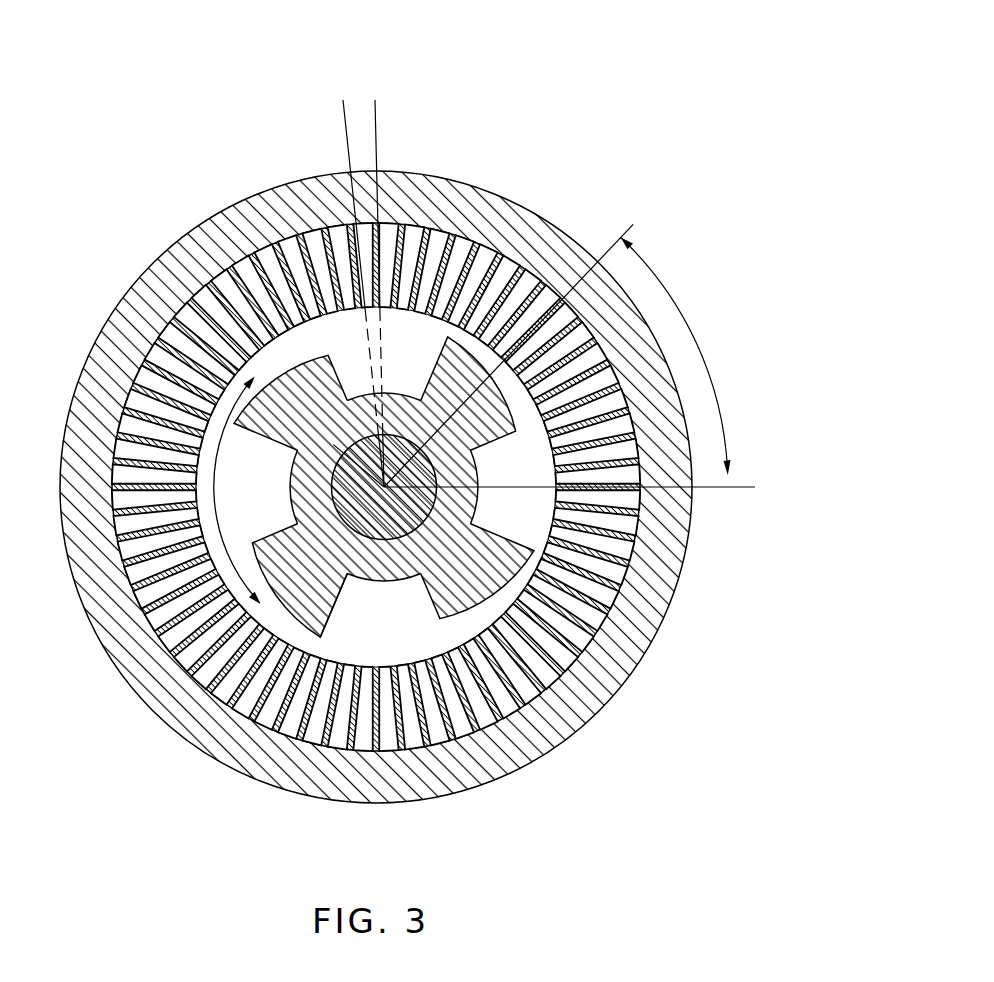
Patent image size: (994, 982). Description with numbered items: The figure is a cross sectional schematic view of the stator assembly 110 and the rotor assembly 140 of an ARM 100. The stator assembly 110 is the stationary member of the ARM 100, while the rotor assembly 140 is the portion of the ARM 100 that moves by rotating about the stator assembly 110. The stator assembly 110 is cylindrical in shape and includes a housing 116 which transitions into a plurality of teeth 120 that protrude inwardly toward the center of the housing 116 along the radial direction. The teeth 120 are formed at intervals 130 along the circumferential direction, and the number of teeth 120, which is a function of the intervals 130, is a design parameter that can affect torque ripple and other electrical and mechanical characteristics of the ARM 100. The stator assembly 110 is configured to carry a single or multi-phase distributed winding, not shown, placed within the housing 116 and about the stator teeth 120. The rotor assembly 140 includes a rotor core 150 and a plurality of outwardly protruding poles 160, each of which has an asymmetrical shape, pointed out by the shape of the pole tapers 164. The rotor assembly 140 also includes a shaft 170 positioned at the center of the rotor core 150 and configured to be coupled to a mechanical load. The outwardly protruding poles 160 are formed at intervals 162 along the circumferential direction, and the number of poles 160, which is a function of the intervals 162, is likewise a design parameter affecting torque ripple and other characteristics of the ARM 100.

The ARM 100 is at (450, 435).
The stator assembly 110 is at (376, 442).
The housing 116 is at (174, 293).
The teeth 120 is at (478, 275).
The intervals 130 is at (436, 130).
The rotor assembly 140 is at (466, 601).
The rotor core 150 is at (470, 508).
The outwardly protruding poles 160 is at (320, 630).
The intervals 162 is at (247, 474).
The pole tapers 164 is at (297, 557).
The shaft 170 is at (493, 590).